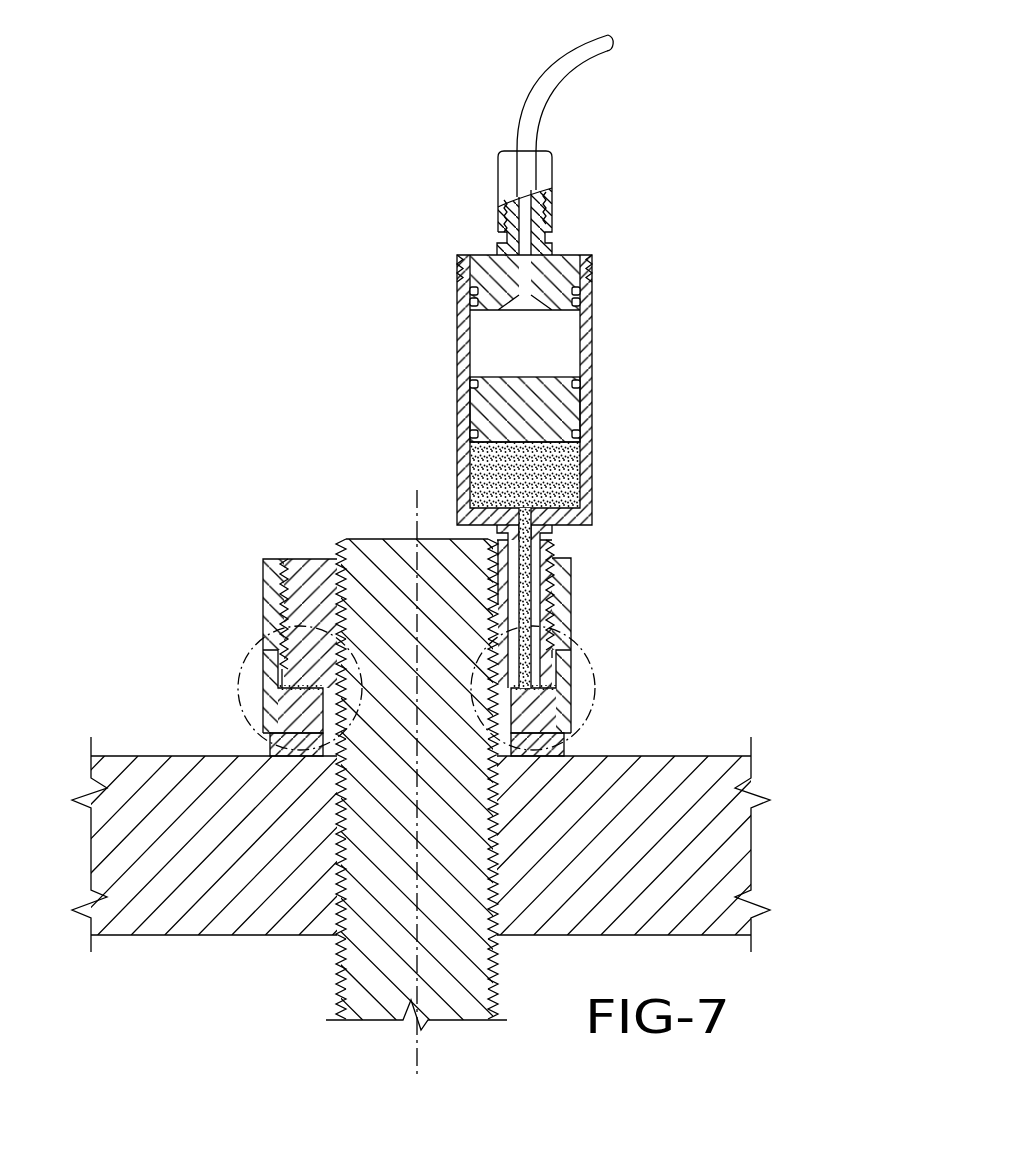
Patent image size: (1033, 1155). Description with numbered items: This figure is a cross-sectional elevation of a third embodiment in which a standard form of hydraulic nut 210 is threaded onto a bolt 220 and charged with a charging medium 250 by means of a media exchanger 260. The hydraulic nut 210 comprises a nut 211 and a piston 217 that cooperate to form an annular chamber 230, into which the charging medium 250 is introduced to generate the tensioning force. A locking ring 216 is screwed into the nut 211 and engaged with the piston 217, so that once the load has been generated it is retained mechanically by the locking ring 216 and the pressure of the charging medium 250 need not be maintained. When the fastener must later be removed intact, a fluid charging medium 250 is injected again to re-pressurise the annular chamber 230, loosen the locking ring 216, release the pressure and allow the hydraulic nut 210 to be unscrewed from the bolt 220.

The hydraulic nut 210 is at (570, 675).
The nut 211 is at (310, 558).
The locking ring 216 is at (572, 607).
The piston 217 is at (267, 678).
The bolt 220 is at (385, 960).
The annular chamber 230 is at (272, 740).
The charging medium 250 is at (548, 480).
The media exchanger 260 is at (457, 323).